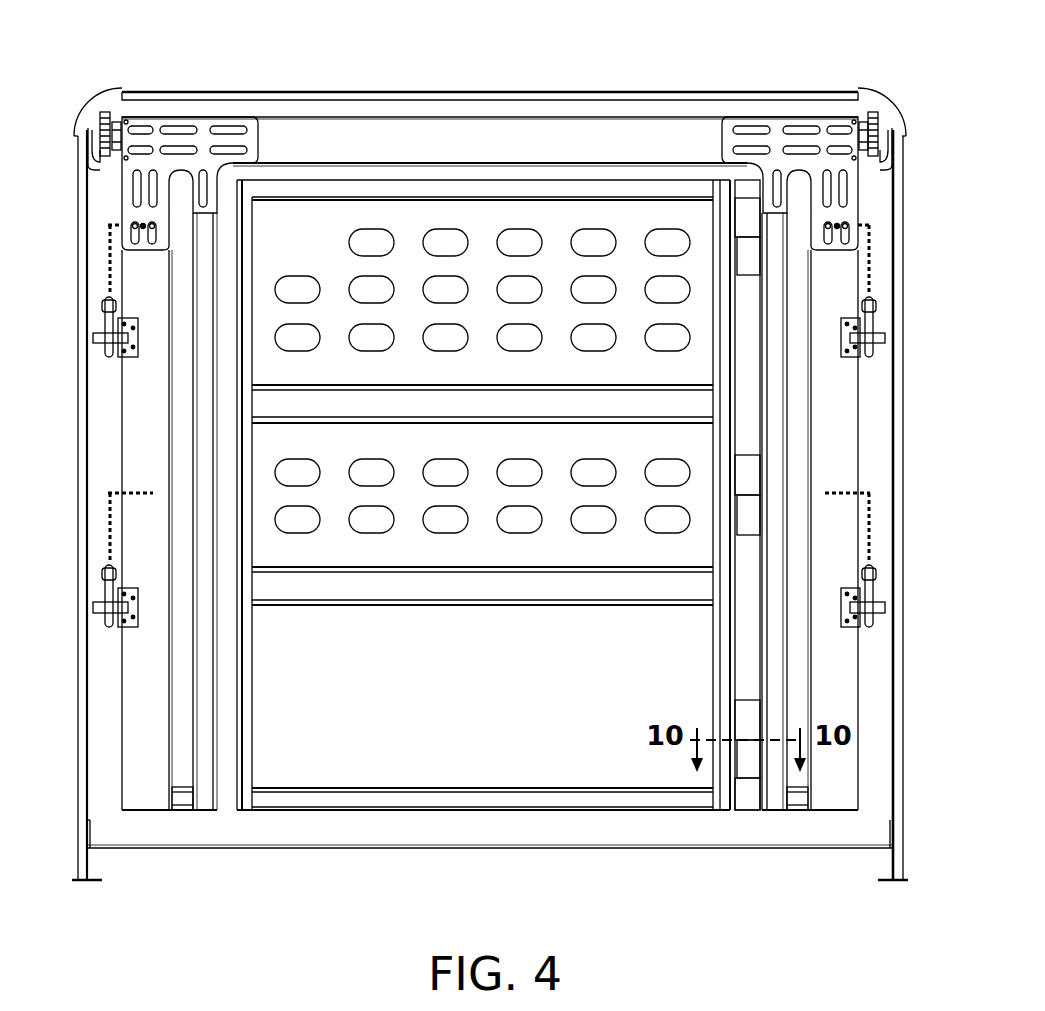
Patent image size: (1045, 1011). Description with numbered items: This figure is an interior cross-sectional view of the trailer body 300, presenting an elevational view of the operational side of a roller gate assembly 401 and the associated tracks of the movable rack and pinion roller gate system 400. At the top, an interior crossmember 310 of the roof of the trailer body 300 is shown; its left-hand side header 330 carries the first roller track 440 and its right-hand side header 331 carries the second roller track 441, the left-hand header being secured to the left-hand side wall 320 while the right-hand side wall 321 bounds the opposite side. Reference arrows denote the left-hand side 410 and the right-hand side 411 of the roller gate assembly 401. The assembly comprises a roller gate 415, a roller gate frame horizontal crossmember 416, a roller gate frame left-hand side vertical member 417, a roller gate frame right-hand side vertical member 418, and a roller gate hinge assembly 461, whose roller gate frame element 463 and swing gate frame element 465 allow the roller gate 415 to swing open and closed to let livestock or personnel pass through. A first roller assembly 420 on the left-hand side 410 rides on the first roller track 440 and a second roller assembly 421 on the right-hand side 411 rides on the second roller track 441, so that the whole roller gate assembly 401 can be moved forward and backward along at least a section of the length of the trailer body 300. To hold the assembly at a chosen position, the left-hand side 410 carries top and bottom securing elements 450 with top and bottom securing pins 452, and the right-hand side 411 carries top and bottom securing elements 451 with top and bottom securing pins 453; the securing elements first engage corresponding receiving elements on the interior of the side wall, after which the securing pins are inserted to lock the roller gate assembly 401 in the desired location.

The trailer body 300 is at (347, 80).
The interior crossmember 310 is at (172, 92).
The left-hand side wall 320 is at (72, 400).
The right-hand side wall 321 is at (905, 413).
The left-hand side header 330 is at (86, 102).
The right-hand side header 331 is at (890, 104).
The rack and pinion roller gate system 400 is at (446, 106).
The roller gate assembly 401 is at (593, 130).
The left-hand side of roller gate assembly 410 is at (114, 108).
The right-hand side of roller gate assembly 411 is at (862, 108).
The roller gate 415 is at (360, 760).
The roller gate frame horizontal crossmember 416 is at (553, 130).
The roller gate frame left-hand side vertical member 417 is at (132, 730).
The roller gate frame right-hand side vertical member 418 is at (850, 680).
The first roller assembly 420 is at (88, 111).
The second roller assembly 421 is at (890, 111).
The first roller track 440 is at (97, 162).
The second roller track 441 is at (883, 162).
The top and bottom securing elements 450 is at (105, 352).
The top and bottom securing elements 451 is at (862, 355).
The top and bottom securing pins 452 is at (104, 312).
The top and bottom securing pins 453 is at (874, 312).
The roller gate hinge assembly 461 is at (772, 238).
The roller gate frame element 463 is at (775, 383).
The swing gate frame element 465 is at (722, 190).